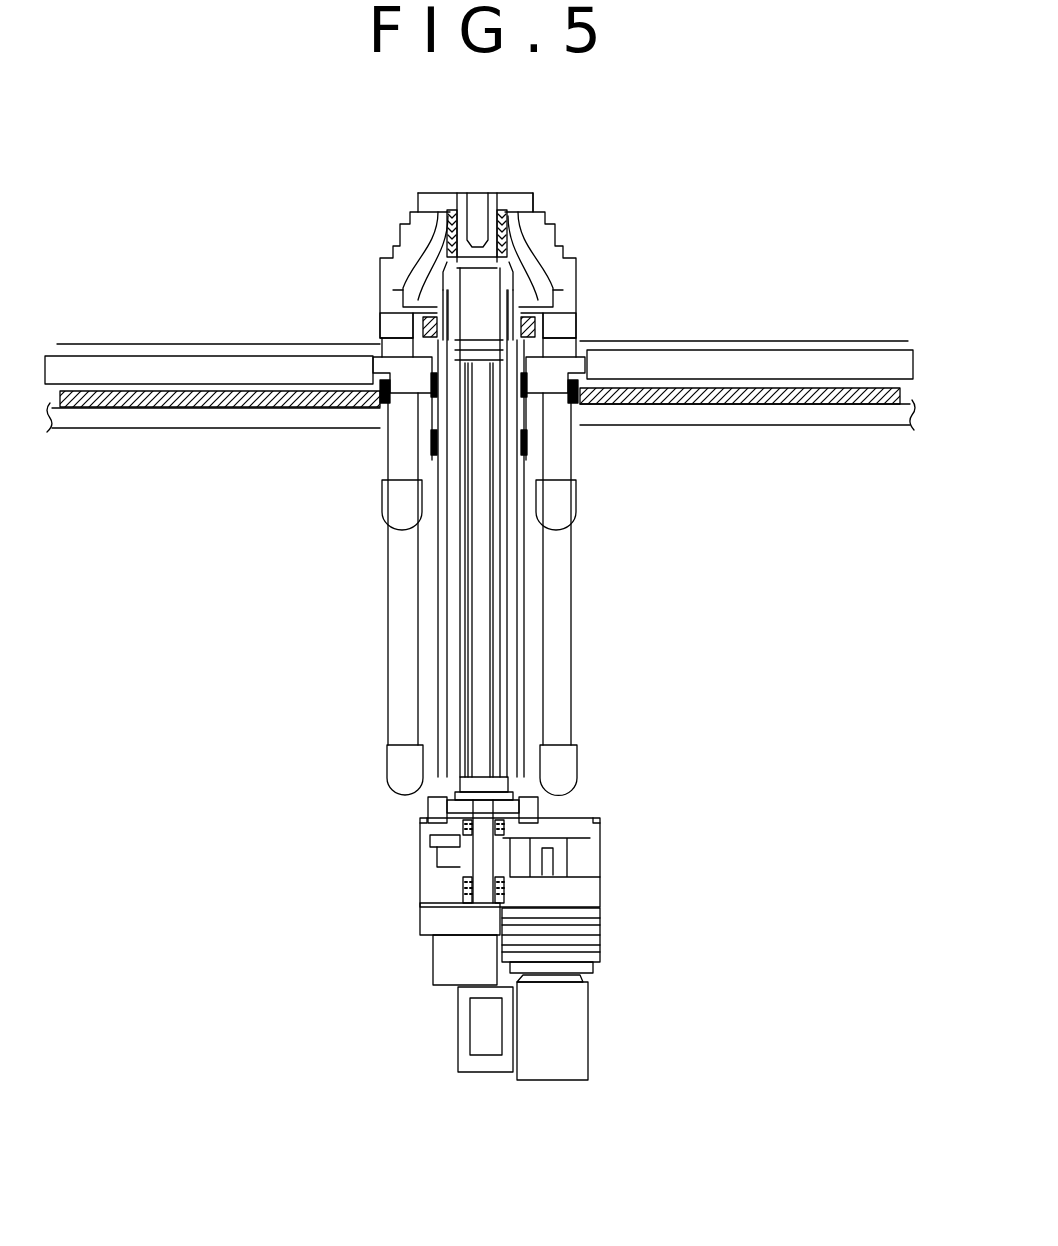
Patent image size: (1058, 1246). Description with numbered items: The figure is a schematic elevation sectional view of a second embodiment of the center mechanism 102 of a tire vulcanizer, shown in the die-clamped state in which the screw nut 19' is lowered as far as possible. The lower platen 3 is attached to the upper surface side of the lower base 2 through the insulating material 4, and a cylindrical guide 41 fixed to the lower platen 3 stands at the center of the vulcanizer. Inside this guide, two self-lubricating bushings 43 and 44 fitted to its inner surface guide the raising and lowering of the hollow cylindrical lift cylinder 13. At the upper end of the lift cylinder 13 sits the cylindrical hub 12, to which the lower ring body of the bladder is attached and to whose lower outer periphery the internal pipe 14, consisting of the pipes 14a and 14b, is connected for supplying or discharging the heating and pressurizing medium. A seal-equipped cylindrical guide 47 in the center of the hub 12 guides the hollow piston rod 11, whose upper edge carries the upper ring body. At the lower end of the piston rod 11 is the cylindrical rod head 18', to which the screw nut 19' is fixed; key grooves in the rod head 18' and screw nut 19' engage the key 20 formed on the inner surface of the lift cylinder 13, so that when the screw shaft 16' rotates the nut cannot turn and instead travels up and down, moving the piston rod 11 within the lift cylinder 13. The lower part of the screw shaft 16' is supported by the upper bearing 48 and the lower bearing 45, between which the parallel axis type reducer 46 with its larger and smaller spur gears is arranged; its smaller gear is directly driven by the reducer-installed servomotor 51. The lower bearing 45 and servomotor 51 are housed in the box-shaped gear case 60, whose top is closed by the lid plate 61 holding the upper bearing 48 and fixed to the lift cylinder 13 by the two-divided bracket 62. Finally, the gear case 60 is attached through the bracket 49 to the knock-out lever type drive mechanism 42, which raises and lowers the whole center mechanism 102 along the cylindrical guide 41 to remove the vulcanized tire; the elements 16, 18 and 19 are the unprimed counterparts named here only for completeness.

The cylindrical guide 47 is at (503, 193).
The cylindrical hub 12 is at (562, 268).
The lower platen 3 is at (748, 340).
The insulating material 4 is at (765, 405).
The lower base 2 is at (703, 428).
The bushing 43 is at (578, 348).
The cylindrical guide 41 is at (413, 432).
The bushing 44 is at (545, 437).
The internal pipe 14 is at (474, 594).
The internal pipe 14a is at (388, 589).
The internal pipe 14b is at (572, 590).
The piston rod 11 is at (460, 553).
The key 20 is at (525, 555).
The lift cylinder 13 is at (440, 665).
The screw shaft 16' is at (561, 522).
The central rod 16 is at (561, 522).
The rod head 18' is at (550, 744).
The plate 18 is at (550, 744).
The screw nut 19' is at (553, 766).
The lower plate 19 is at (553, 766).
The two-divided bracket 62 is at (540, 800).
The lid plate 61 is at (600, 822).
The upper bearing 48 is at (462, 825).
The parallel axis type reducer 46 is at (450, 868).
The lower bearing 45 is at (452, 885).
The gear case 60 is at (602, 882).
The bracket 49 is at (433, 968).
The drive mechanism 42 is at (470, 1035).
The reducer-installed servomotor 51 is at (605, 1025).
The center mechanism 102 is at (763, 540).